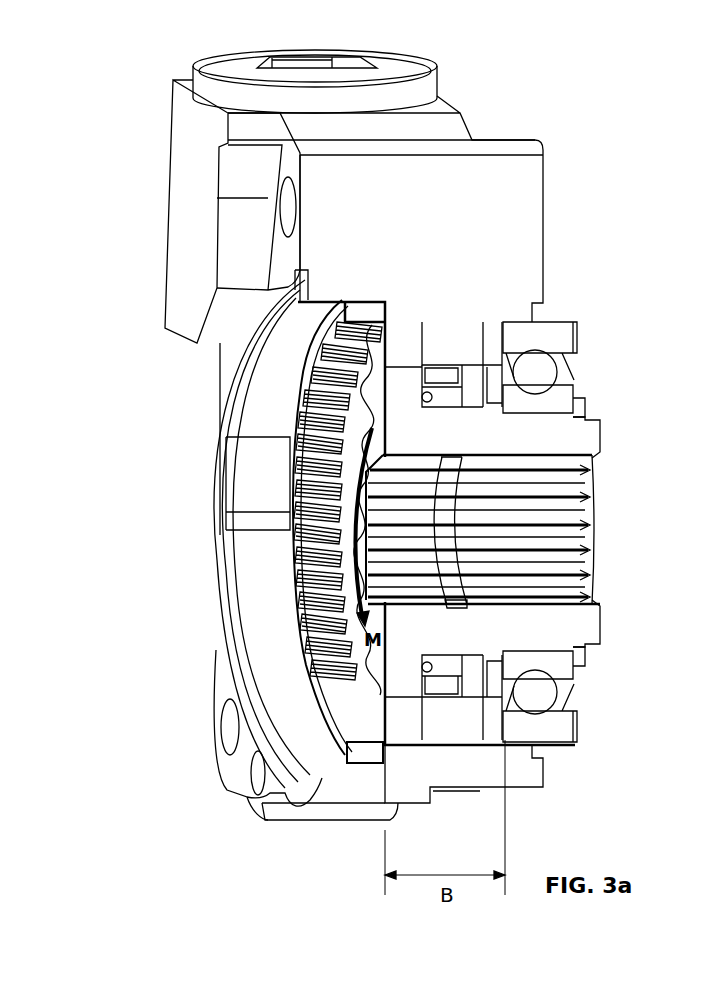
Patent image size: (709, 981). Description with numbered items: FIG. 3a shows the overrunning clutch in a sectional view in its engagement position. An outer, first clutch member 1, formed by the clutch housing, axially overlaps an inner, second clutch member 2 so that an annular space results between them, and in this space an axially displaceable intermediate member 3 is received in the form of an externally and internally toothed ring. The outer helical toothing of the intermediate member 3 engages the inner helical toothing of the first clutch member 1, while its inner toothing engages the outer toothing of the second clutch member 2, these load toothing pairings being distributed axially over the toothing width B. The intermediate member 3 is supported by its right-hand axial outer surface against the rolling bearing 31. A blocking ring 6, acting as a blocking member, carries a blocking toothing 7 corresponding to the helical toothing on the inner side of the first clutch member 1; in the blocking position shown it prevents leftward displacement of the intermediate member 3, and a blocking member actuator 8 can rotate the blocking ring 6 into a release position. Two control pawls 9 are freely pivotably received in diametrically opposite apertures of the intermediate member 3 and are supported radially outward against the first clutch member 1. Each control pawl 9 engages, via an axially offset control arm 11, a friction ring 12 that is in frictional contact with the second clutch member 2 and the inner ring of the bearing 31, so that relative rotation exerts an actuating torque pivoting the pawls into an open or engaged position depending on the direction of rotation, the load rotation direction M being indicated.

The first clutch member 1 is at (440, 268).
The second clutch member 2 is at (420, 446).
The intermediate member 3 is at (373, 697).
The blocking ring 6 is at (362, 752).
The blocking toothing 7 is at (322, 548).
The blocking member actuator 8 is at (172, 183).
The control pawls 9 is at (453, 358).
The control arm 11 is at (473, 382).
The friction ring 12 is at (445, 398).
The rolling bearing 31 is at (600, 732).